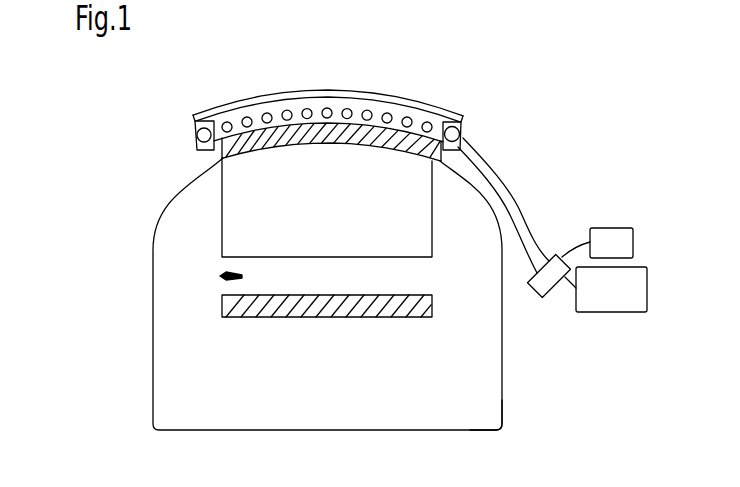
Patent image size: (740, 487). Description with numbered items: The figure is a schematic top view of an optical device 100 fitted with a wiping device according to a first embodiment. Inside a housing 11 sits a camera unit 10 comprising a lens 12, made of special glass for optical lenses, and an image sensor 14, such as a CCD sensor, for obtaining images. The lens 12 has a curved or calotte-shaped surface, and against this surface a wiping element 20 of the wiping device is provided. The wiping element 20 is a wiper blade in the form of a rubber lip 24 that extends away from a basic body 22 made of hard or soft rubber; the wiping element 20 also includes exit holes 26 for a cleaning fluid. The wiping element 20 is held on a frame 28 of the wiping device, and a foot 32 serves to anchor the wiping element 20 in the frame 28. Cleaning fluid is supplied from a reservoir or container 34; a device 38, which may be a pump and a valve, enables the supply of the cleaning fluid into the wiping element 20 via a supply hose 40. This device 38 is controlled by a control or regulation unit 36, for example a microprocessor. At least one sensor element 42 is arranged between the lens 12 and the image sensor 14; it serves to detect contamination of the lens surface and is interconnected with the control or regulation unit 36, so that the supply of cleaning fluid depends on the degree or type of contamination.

The optical device 100 is at (143, 403).
The camera unit 10 is at (483, 377).
The housing 11 is at (512, 417).
The lens 12 is at (432, 229).
The image sensor 14 is at (371, 317).
The sensor element 42 is at (226, 273).
The wiping element 20 is at (329, 110).
The foot 32 is at (360, 92).
The exit holes 26 is at (392, 101).
The basic body 22 is at (424, 110).
The rubber lip 24 is at (269, 143).
The frame 28 is at (195, 133).
The supply hose 40 is at (505, 191).
The device 38 is at (543, 298).
The control or regulation unit 36 is at (597, 243).
The container 34 is at (606, 289).